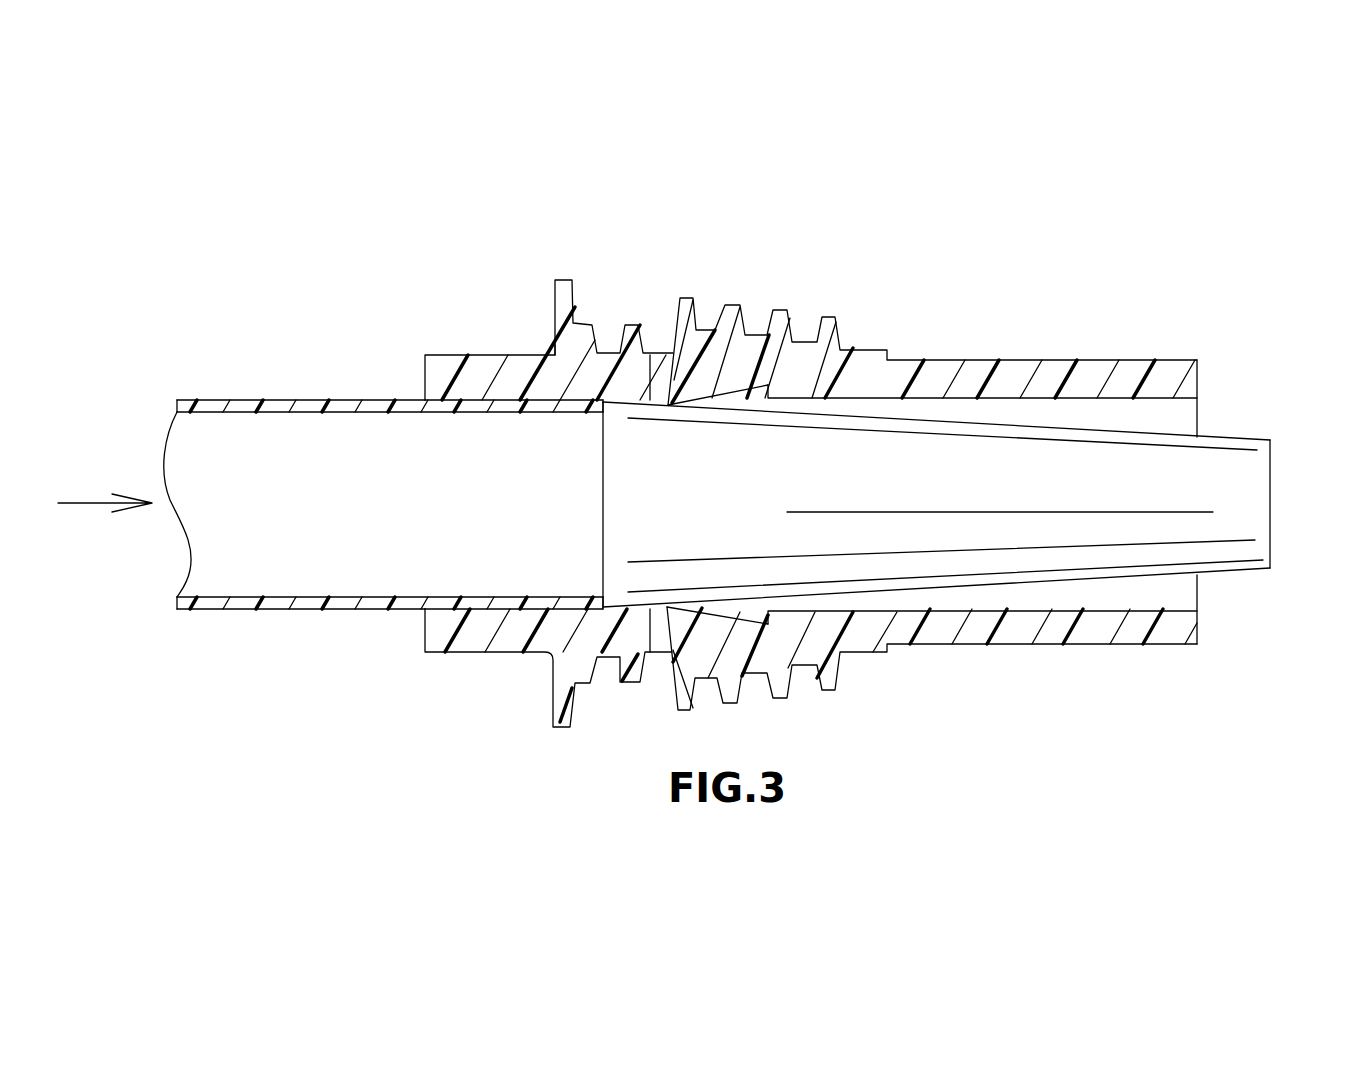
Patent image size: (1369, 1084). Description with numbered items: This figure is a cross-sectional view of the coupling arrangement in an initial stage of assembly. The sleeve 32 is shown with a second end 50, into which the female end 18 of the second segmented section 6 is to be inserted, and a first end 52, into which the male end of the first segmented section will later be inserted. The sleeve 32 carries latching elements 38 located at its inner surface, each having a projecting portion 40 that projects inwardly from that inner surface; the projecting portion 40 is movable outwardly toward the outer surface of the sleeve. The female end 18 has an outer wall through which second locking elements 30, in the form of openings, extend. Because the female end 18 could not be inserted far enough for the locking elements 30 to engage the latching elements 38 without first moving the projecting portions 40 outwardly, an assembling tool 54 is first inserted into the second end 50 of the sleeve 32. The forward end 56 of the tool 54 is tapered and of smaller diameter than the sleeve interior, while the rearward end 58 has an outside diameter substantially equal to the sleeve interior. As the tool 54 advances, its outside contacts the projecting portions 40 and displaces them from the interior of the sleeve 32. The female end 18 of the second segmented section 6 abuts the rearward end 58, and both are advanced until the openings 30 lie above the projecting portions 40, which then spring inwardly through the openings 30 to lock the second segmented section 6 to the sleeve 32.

The second segmented section 6 is at (211, 608).
The female end 18 is at (600, 596).
The second locking element 30 is at (470, 412).
The sleeve 32 is at (605, 315).
The latching element 38 is at (877, 348).
The projecting portion 40 is at (733, 404).
The second end 50 is at (424, 389).
The first end 52 is at (1198, 377).
The assembling tool 54 is at (881, 504).
The forward end 56 is at (1228, 437).
The rearward end 58 is at (605, 480).